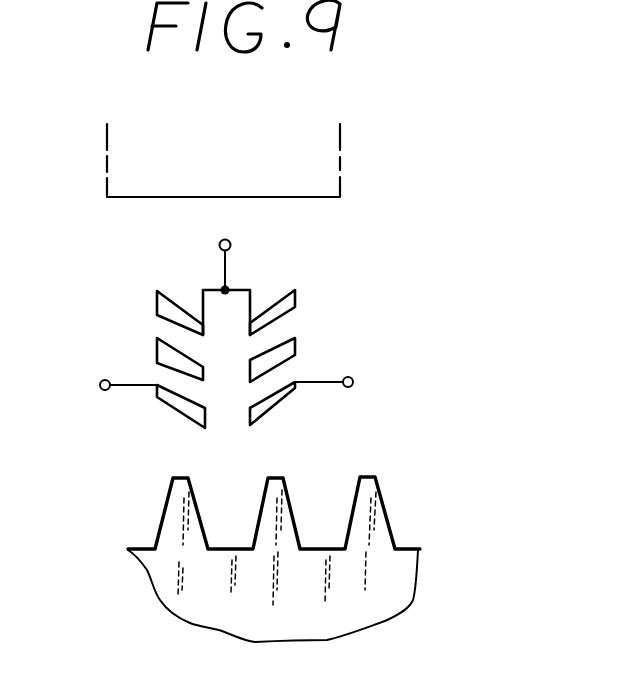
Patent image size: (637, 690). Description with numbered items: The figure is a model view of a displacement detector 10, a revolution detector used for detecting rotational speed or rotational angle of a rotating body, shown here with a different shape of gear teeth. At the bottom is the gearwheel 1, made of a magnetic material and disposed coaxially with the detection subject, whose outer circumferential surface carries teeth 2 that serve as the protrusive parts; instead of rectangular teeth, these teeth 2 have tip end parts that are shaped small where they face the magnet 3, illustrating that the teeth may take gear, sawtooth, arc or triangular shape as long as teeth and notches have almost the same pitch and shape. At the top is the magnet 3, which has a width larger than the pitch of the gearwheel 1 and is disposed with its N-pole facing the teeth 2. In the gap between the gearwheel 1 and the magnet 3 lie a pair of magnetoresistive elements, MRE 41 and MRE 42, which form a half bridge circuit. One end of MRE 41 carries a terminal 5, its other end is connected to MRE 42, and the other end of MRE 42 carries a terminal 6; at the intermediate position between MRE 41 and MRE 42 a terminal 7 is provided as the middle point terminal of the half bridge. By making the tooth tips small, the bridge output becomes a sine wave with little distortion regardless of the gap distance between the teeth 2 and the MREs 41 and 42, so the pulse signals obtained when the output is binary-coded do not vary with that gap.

The gearwheel 1 is at (398, 588).
The teeth 2 is at (390, 516).
The magnet 3 is at (340, 177).
The terminal 5 is at (335, 383).
The terminal 6 is at (118, 385).
The terminal 7 is at (225, 248).
The displacement detector 10 is at (272, 337).
The MRE 41 is at (312, 352).
The MRE 42 is at (143, 325).